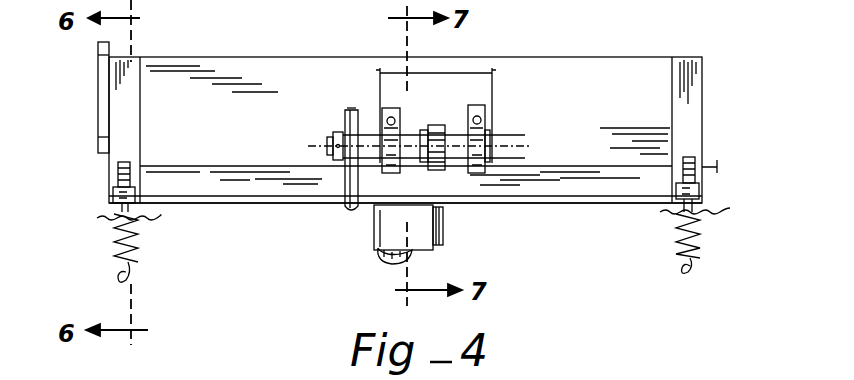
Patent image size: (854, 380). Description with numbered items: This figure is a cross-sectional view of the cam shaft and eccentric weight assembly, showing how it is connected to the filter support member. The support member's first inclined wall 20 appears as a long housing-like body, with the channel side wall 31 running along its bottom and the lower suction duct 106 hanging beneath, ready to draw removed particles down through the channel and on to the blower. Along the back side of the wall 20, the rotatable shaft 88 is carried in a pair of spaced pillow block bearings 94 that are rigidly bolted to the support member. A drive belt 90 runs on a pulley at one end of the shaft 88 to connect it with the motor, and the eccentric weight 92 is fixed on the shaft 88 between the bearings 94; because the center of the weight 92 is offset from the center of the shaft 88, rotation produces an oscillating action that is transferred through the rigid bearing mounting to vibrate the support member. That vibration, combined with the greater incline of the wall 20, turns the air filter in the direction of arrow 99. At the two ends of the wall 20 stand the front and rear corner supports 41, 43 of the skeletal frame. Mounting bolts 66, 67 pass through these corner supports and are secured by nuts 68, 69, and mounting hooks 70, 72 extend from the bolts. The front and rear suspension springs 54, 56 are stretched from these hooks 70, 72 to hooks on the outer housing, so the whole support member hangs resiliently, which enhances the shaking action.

The first inclined wall 20 is at (640, 103).
The channel side wall 31 is at (224, 191).
The front corner support 41 is at (697, 158).
The rear corner support 43 is at (110, 166).
The front suspension spring 54 is at (678, 236).
The rear suspension spring 56 is at (137, 240).
The mounting bolt 66 is at (700, 207).
The mounting bolt 67 is at (130, 176).
The nut 68 is at (676, 188).
The nut 69 is at (113, 195).
The mounting hook 70 is at (695, 268).
The mounting hook 72 is at (118, 278).
The rotatable shaft 88 is at (372, 147).
The drive belt 90 is at (349, 198).
The eccentric weight 92 is at (433, 127).
The pillow block bearings 94 is at (392, 172).
The arrow 99 is at (478, 146).
The lower suction duct 106 is at (433, 226).